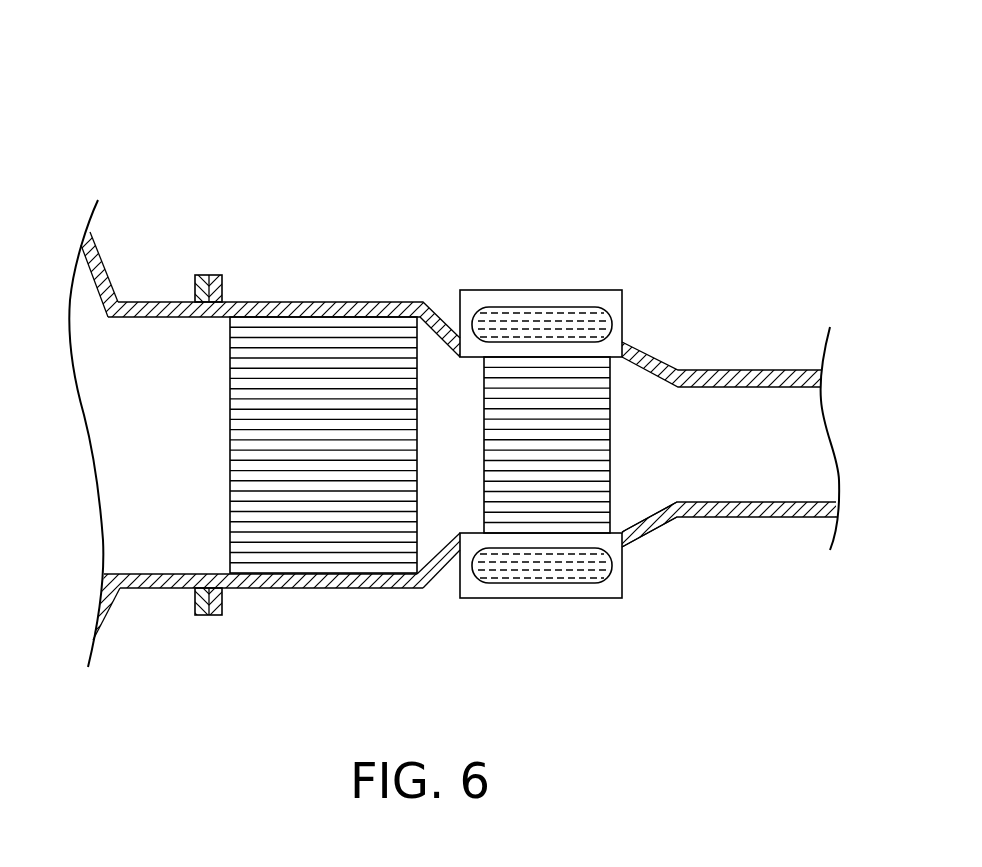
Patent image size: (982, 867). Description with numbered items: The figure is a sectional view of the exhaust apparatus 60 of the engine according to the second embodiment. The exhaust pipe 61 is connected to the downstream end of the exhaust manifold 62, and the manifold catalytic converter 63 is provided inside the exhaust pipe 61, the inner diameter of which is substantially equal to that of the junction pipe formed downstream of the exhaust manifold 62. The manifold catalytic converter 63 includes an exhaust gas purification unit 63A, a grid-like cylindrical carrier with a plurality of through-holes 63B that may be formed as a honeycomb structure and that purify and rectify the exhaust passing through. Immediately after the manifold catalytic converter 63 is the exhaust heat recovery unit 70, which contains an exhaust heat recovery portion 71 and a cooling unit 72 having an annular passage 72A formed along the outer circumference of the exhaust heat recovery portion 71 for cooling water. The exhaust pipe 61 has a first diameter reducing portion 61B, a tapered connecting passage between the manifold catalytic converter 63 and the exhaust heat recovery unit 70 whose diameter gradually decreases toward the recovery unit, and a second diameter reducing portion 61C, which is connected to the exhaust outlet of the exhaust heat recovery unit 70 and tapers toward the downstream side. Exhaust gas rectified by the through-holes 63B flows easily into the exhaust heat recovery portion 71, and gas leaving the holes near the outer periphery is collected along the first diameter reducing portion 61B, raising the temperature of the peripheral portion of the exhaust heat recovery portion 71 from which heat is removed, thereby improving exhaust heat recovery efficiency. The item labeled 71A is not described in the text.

The exhaust apparatus 60 is at (684, 80).
The exhaust pipe 61 is at (459, 424).
The first diameter reducing portion 61B is at (445, 568).
The second diameter reducing portion 61C is at (662, 525).
The exhaust manifold 62 is at (100, 262).
The manifold catalytic converter 63 is at (320, 466).
The exhaust gas purification unit 63A is at (231, 358).
The through-holes 63B is at (330, 340).
The exhaust heat recovery unit 70 is at (566, 424).
The exhaust heat recovery portion 71 is at (610, 382).
The honeycomb cells 71A is at (570, 370).
The cooling unit 72 is at (543, 588).
The annular passage 72A is at (587, 568).